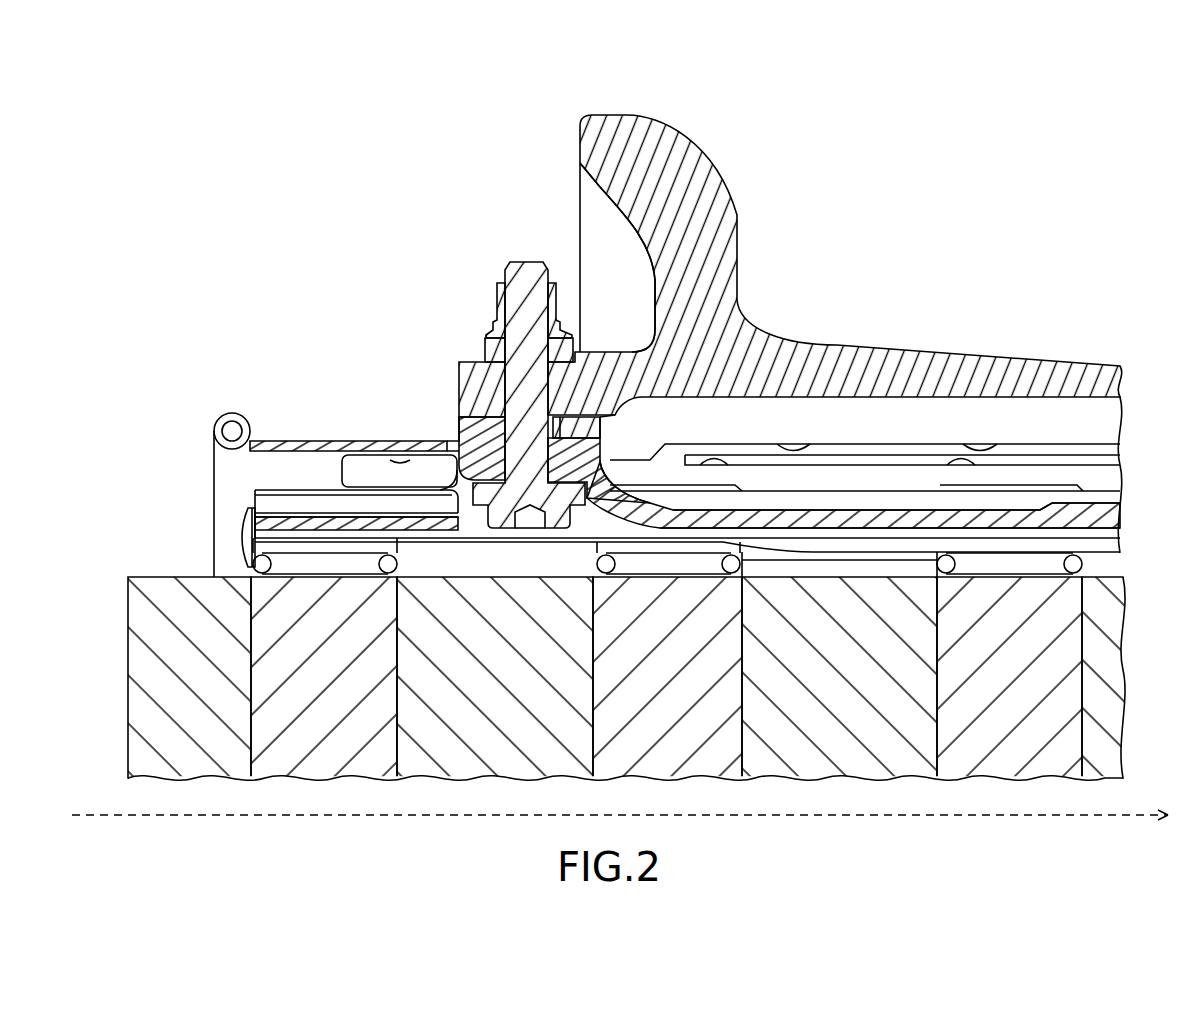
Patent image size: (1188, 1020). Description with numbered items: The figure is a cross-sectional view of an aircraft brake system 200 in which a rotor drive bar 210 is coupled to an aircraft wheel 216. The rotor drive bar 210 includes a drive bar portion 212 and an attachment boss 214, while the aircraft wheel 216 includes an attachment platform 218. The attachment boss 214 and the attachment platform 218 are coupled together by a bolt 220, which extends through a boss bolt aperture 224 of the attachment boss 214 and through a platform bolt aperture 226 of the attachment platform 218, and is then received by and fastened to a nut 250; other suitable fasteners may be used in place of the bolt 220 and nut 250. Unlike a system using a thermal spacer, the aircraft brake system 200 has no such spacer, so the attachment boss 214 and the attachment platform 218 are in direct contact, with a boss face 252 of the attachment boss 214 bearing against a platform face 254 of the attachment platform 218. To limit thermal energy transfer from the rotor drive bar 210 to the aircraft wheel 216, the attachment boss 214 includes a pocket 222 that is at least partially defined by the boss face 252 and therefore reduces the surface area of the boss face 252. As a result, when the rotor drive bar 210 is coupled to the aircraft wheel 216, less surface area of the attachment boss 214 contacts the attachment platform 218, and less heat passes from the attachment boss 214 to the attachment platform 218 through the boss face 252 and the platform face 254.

The aircraft brake system 200 is at (324, 78).
The rotor drive bar 210 is at (890, 517).
The drive bar portion 212 is at (830, 517).
The attachment boss 214 is at (458, 448).
The aircraft wheel 216 is at (730, 303).
The attachment platform 218 is at (750, 417).
The bolt 220 is at (526, 275).
The pocket 222 is at (558, 438).
The boss bolt aperture 224 is at (457, 485).
The platform bolt aperture 226 is at (567, 383).
The nut 250 is at (493, 328).
The boss face 252 is at (457, 433).
The platform face 254 is at (471, 407).